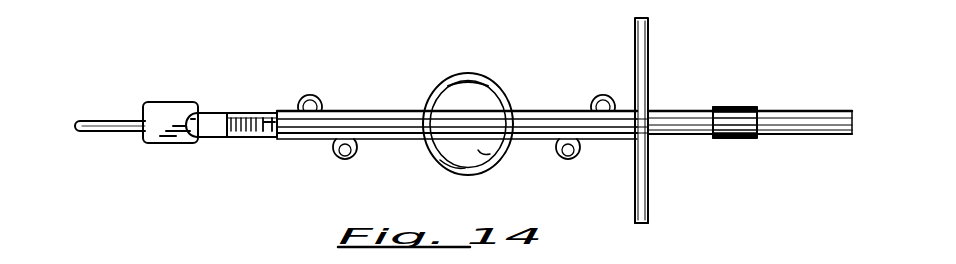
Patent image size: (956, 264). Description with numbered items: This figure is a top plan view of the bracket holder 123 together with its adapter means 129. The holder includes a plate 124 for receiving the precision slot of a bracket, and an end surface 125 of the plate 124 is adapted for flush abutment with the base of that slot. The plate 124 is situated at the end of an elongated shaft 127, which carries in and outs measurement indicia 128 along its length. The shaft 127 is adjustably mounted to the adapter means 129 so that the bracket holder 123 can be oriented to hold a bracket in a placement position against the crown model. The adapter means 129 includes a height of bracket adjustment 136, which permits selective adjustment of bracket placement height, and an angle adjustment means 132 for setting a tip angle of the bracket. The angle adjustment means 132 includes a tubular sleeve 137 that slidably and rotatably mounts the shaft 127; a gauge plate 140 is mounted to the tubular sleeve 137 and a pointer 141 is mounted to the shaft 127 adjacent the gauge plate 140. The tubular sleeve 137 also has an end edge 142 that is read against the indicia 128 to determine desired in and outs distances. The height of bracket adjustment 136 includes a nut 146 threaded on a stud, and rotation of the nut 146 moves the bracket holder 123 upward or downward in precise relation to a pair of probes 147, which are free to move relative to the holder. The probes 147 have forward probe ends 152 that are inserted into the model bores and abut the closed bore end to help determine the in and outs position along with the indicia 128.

The bracket holder 123 is at (234, 105).
The plate 124 is at (187, 143).
The end surface 125 is at (147, 144).
The elongated shaft 127 is at (278, 110).
The in and outs measurement indicia 128 is at (250, 142).
The adapter means 129 is at (517, 87).
The angle adjustment means 132 is at (670, 87).
The height of bracket adjustment 136 is at (436, 168).
The tubular sleeve 137 is at (537, 140).
The gauge plate 140 is at (650, 200).
The pointer 141 is at (730, 140).
The end edge 142 is at (276, 140).
The nut 146 is at (482, 153).
The probes 147 is at (117, 121).
The forward probe ends 152 is at (78, 126).